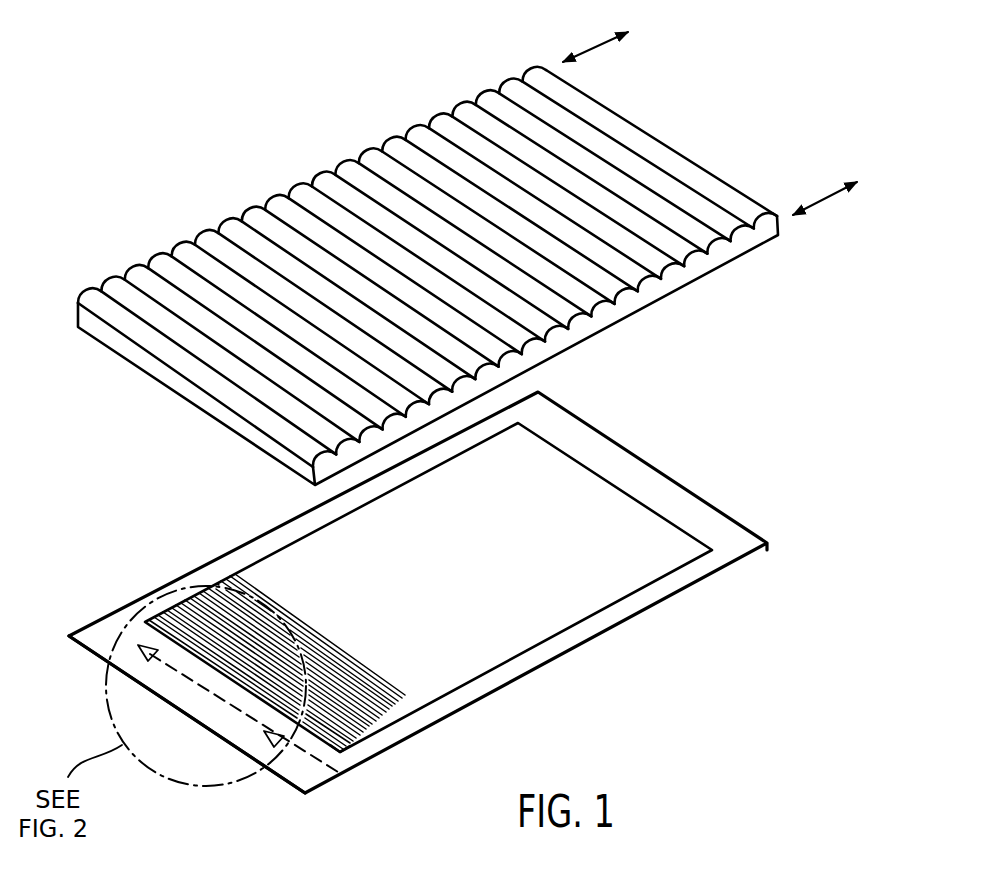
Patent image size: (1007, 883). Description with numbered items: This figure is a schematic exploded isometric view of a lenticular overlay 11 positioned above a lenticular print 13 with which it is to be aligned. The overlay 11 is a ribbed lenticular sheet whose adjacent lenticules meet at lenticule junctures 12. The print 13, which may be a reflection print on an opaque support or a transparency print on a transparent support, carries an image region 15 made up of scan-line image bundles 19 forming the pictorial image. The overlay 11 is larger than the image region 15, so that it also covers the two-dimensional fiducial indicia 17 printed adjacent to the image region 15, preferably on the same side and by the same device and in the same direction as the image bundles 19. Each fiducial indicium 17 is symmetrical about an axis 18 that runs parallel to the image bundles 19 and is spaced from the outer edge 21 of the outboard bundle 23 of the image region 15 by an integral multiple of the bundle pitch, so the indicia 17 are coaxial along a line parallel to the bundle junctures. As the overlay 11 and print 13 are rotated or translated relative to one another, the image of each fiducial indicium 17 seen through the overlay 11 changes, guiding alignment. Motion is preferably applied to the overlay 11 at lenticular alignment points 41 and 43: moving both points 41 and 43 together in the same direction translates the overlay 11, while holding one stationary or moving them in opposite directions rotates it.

The lenticular overlay 11 is at (290, 183).
The lenticule junctures 12 is at (626, 290).
The lenticular print 13 is at (230, 533).
The image region 15 is at (542, 628).
The fiducial indicia 17 is at (273, 742).
The axis 18 is at (309, 765).
The image bundles 19 is at (368, 723).
The outer edge 21 is at (328, 748).
The outboard bundle 23 is at (228, 668).
The lenticular alignment point 41 is at (615, 33).
The lenticular alignment point 43 is at (843, 187).